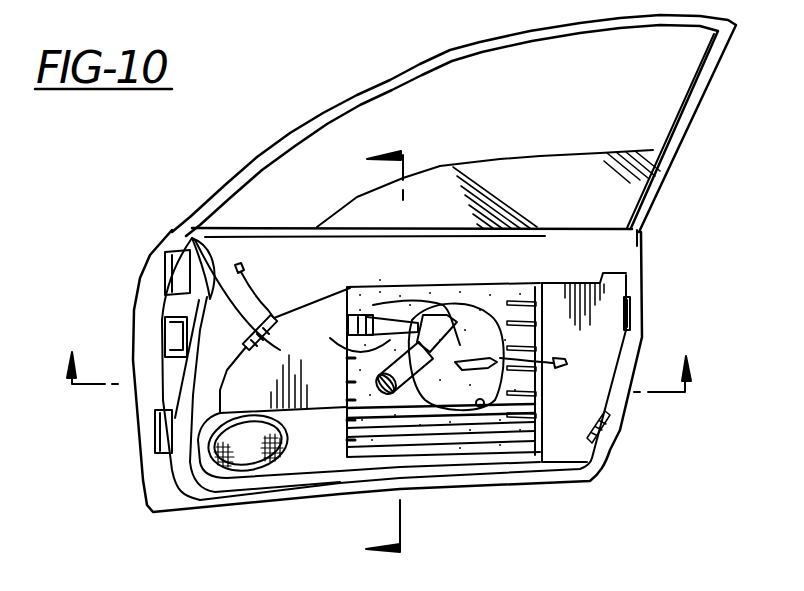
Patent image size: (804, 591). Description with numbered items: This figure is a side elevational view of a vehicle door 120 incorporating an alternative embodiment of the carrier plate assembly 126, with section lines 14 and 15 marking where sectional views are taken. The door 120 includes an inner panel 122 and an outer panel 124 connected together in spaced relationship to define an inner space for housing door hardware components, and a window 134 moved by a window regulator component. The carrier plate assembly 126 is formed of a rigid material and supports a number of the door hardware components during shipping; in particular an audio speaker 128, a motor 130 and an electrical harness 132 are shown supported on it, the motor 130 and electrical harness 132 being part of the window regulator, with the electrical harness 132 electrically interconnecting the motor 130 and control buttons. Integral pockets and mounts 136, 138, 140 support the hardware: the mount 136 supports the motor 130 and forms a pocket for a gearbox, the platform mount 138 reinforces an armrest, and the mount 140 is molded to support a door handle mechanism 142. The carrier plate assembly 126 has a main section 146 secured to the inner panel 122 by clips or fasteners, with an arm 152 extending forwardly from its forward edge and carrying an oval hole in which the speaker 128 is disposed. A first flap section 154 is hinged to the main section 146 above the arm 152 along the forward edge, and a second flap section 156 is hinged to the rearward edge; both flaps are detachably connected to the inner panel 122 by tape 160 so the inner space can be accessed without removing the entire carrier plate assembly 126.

The section line 14- 14 is at (386, 357).
The section line 15- 15 is at (385, 374).
The door 120 is at (651, 287).
The inner panel 122 is at (640, 245).
The outer panel 124 is at (140, 268).
The carrier plate assembly 126 is at (495, 431).
The audio speaker 128 is at (240, 462).
The motor 130 is at (412, 393).
The electrical harness 132 is at (262, 293).
The window 134 is at (570, 168).
The mount 136 is at (478, 296).
The platform mount 138 is at (492, 302).
The mount 140 is at (373, 310).
The door handle mechanism 142 is at (405, 335).
The main section 146 is at (428, 400).
The arm 152 is at (297, 463).
The first flap section 154 is at (243, 377).
The second flap section 156 is at (606, 371).
The tape 160 is at (183, 240).